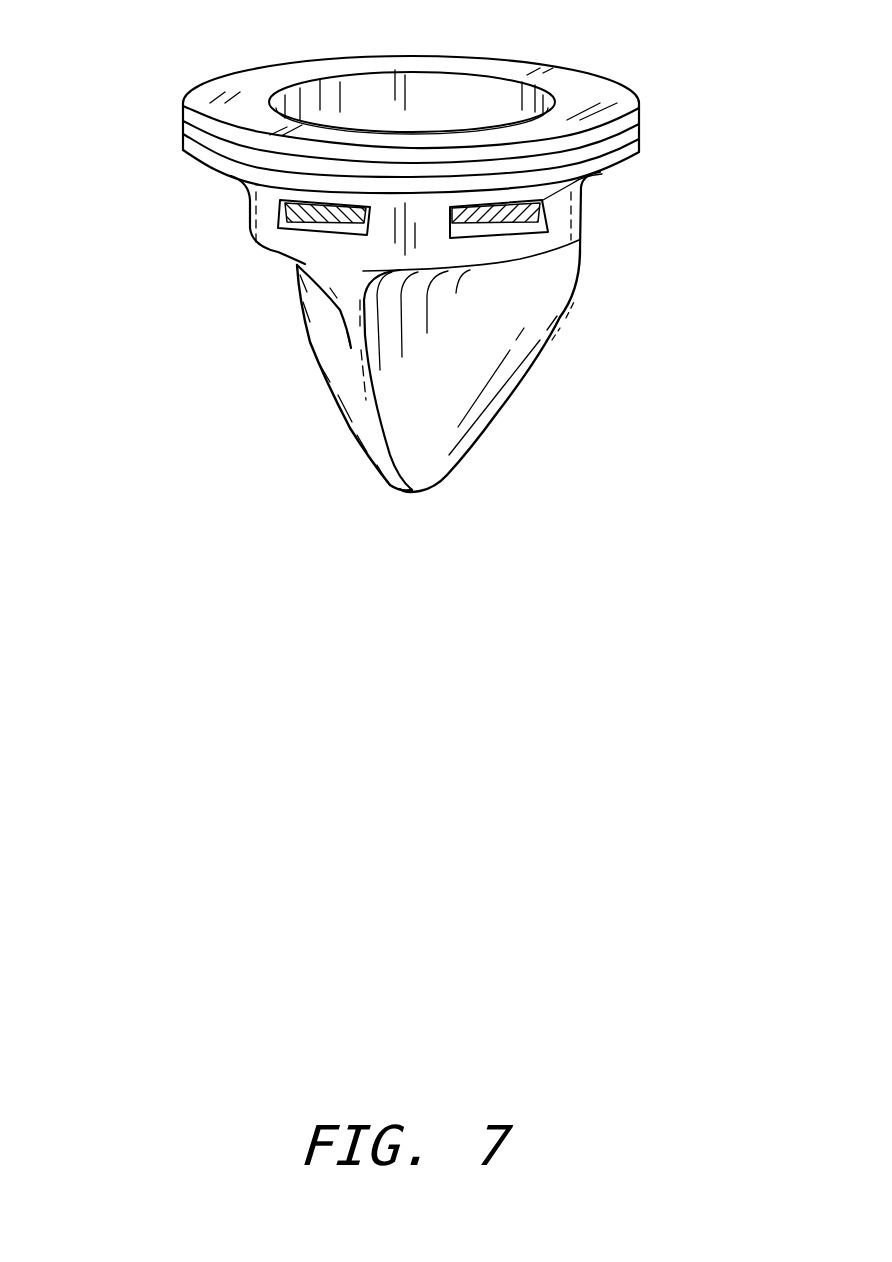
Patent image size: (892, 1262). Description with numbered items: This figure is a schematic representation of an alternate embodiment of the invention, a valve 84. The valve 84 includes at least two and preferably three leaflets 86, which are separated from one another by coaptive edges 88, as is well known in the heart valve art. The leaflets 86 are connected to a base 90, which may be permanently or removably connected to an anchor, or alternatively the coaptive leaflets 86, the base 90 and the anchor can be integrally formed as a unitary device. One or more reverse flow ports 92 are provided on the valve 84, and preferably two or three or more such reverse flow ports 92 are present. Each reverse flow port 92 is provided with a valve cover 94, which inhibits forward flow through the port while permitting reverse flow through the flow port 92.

The valve 84 is at (196, 411).
The leaflets 86 is at (453, 394).
The coaptive edges 88 is at (393, 450).
The base 90 is at (643, 113).
The reverse flow ports 92 is at (528, 228).
The valve cover 94 is at (643, 134).